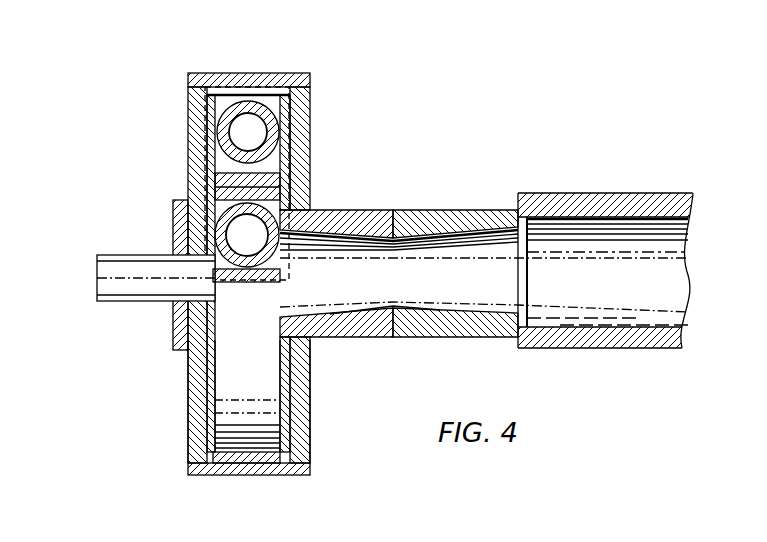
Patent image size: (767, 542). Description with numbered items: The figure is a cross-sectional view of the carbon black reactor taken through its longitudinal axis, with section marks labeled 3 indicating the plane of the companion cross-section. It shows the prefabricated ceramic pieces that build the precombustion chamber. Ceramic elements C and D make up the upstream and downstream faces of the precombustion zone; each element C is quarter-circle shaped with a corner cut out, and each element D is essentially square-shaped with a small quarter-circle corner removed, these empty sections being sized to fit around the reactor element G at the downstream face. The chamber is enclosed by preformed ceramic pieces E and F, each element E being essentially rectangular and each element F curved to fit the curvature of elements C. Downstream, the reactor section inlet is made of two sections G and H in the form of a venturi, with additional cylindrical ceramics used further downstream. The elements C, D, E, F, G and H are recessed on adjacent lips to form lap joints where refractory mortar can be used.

The ceramic element C is at (188, 393).
The ceramic element D is at (188, 150).
The ceramic element E is at (282, 73).
The ceramic element F is at (263, 476).
The reactor element G is at (436, 263).
The reactor section H is at (670, 273).
The section line 3- 3 is at (250, 20).